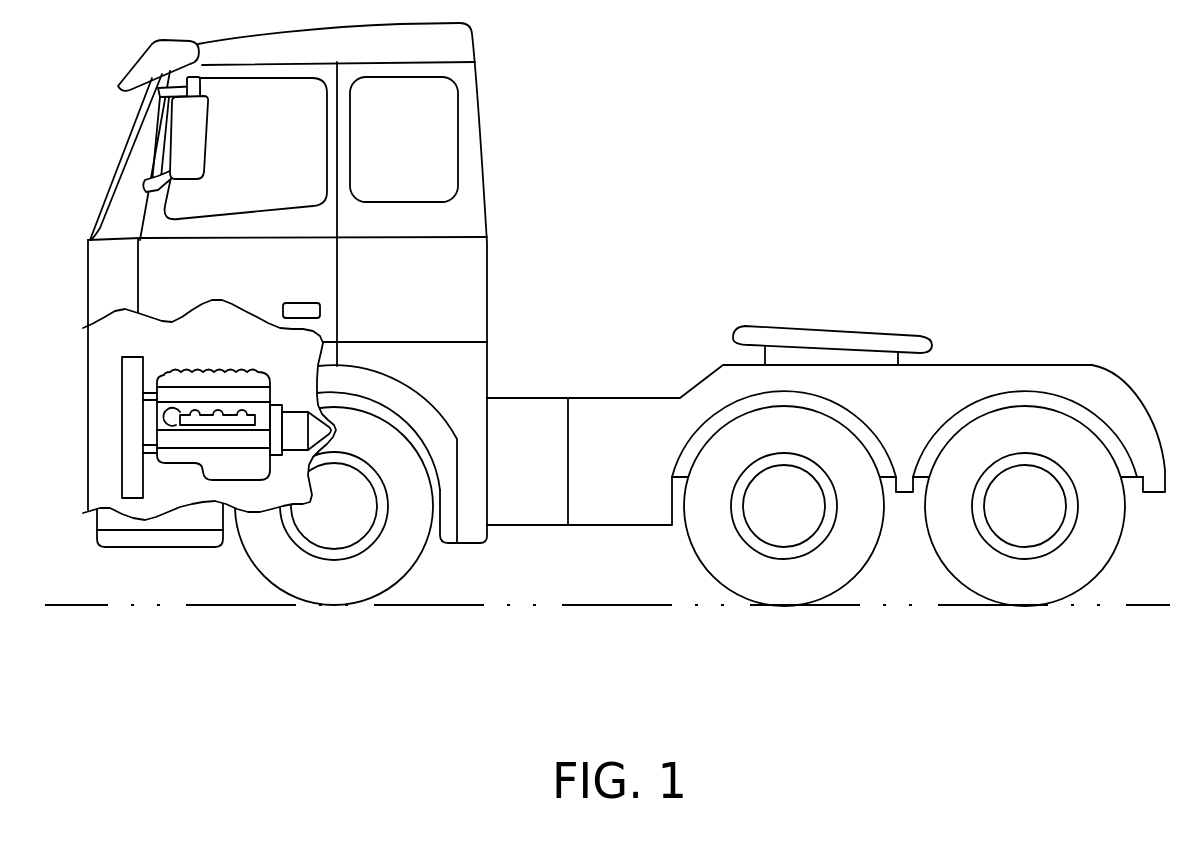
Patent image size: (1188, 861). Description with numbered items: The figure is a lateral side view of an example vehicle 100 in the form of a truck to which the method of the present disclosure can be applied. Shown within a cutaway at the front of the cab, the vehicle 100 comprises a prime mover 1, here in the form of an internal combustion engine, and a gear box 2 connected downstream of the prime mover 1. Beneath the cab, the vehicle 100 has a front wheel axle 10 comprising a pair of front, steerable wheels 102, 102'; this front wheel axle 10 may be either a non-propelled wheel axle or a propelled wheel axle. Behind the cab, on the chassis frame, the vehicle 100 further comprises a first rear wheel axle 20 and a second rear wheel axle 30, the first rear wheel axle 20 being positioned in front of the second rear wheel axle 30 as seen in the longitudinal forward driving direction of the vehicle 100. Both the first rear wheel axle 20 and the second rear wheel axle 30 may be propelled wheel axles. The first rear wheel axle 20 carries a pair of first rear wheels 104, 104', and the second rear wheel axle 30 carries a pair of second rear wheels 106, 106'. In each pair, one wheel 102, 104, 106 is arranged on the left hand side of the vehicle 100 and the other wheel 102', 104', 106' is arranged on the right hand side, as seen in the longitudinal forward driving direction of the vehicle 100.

The vehicle 100 is at (607, 377).
The prime mover 1 is at (200, 440).
The gear box 2 is at (297, 443).
The front wheel axle 10 is at (333, 507).
The first rear wheel axle 20 is at (785, 505).
The second rear wheel axle 30 is at (1025, 507).
The front steerable wheel 102 is at (308, 569).
The front steerable wheel 102' is at (308, 569).
The first rear wheel 104 is at (701, 544).
The first rear wheel 104' is at (701, 544).
The second rear wheel 106 is at (954, 544).
The second rear wheel 106' is at (954, 544).